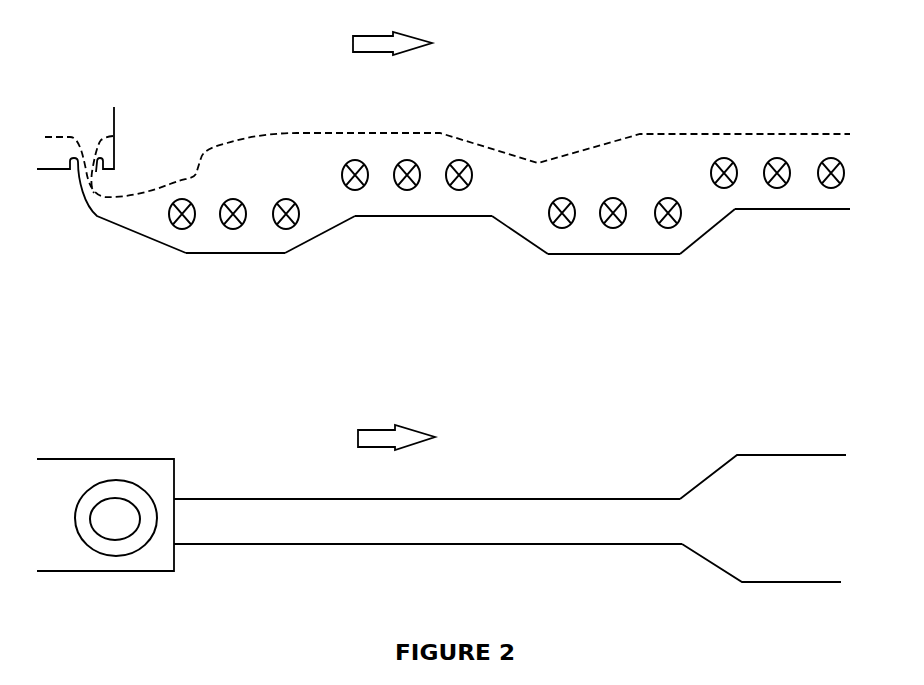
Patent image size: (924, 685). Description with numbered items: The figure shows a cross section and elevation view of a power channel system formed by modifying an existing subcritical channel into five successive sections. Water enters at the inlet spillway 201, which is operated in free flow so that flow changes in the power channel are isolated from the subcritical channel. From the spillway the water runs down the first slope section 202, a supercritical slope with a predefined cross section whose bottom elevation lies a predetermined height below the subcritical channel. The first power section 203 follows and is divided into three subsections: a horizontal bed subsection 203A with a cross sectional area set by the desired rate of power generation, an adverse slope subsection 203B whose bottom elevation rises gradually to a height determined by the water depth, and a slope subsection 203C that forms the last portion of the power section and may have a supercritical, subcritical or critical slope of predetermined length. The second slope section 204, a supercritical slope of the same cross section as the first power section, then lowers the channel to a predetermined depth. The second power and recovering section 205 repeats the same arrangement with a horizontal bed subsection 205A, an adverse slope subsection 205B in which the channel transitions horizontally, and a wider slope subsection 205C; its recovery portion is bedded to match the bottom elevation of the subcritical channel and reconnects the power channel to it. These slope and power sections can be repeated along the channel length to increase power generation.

The inlet spillway 201 is at (38, 97).
The first slope section 202 is at (95, 258).
The first power section 203 is at (339, 283).
The horizontal bed subsection 203A is at (237, 253).
The adverse slope subsection 203B is at (323, 235).
The slope subsection 203C is at (423, 235).
The second slope section 204 is at (545, 260).
The second power and recovering section 205 is at (700, 395).
The horizontal bed subsection of second power section 205A is at (637, 254).
The adverse slope subsection of second power section 205B is at (706, 233).
The slope subsection of second power section 205C is at (792, 228).